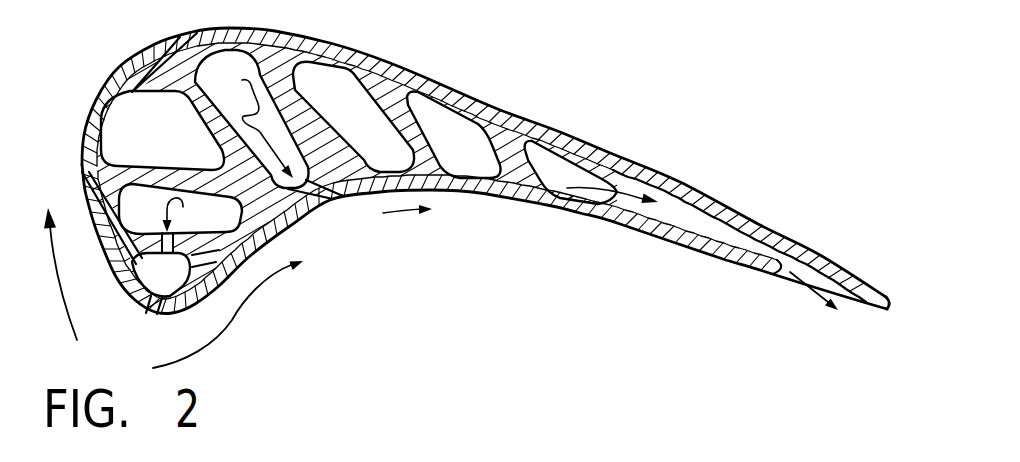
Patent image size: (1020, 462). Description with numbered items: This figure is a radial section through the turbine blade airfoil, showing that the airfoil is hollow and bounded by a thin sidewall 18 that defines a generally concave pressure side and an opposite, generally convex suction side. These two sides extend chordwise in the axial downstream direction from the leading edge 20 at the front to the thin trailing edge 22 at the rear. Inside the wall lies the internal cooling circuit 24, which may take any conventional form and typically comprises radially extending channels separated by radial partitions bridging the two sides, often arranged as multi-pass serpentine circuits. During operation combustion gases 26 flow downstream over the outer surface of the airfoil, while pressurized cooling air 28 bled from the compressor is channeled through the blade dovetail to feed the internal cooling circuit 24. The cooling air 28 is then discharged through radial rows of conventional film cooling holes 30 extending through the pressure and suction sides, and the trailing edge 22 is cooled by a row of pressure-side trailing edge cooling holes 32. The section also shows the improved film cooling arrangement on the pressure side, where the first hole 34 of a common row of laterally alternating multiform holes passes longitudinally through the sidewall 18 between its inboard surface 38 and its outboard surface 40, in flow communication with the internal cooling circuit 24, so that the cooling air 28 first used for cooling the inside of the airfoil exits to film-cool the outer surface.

The sidewall 18 is at (463, 190).
The leading edge 20 is at (172, 317).
The trailing edge 22 is at (893, 310).
The internal cooling circuit 24 is at (165, 141).
The combustion gases 26 is at (222, 327).
The cooling air 28 is at (421, 239).
The film cooling holes 30 is at (80, 184).
The trailing edge cooling holes 32 is at (785, 280).
The first hole 34 is at (340, 200).
The inboard surface 38 is at (488, 176).
The outboard surface 40 is at (540, 208).